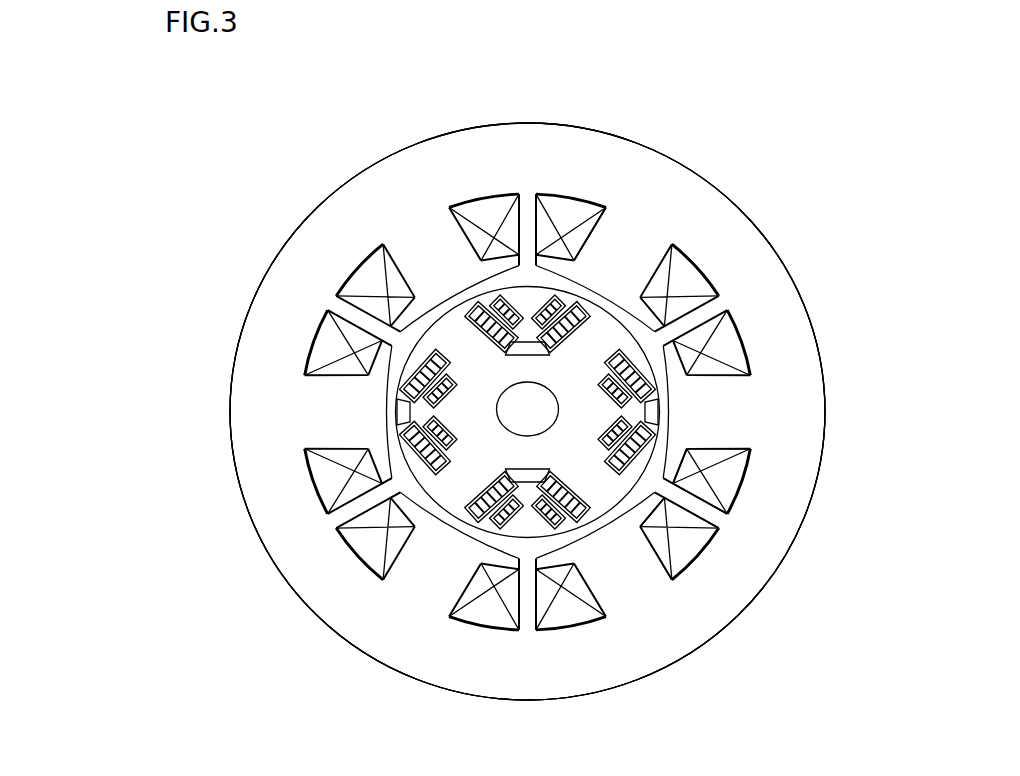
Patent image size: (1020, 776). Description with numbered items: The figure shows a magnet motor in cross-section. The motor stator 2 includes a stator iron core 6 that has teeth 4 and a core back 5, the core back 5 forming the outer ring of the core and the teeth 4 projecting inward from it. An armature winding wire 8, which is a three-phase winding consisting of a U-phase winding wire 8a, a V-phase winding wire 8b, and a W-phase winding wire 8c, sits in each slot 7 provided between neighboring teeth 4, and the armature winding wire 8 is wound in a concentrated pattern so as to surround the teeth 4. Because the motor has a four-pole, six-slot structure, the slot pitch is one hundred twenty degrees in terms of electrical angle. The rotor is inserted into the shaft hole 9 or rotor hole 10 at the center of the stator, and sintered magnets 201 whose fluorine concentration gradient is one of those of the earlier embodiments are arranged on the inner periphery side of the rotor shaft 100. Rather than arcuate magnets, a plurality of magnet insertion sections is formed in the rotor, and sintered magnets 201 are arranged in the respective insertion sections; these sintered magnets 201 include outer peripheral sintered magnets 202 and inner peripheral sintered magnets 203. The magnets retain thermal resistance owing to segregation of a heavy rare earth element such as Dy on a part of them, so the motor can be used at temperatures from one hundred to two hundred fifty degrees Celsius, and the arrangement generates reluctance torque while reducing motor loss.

The motor stator 2 is at (812, 327).
The teeth 4 is at (624, 236).
The core back 5 is at (725, 592).
The stator iron core 6 is at (390, 650).
The slot 7 is at (395, 497).
The armature winding wire 8 is at (867, 560).
The U-phase winding wire 8a is at (333, 341).
The V-phase winding wire 8b is at (680, 268).
The W-phase winding wire 8c is at (483, 212).
The shaft hole 9 is at (463, 290).
The rotor hole 10 is at (367, 258).
The rotor shaft 100 is at (593, 353).
The sintered magnets 201 is at (103, 371).
The outer peripheral sintered magnets 202 is at (407, 440).
The inner peripheral sintered magnets 203 is at (417, 418).